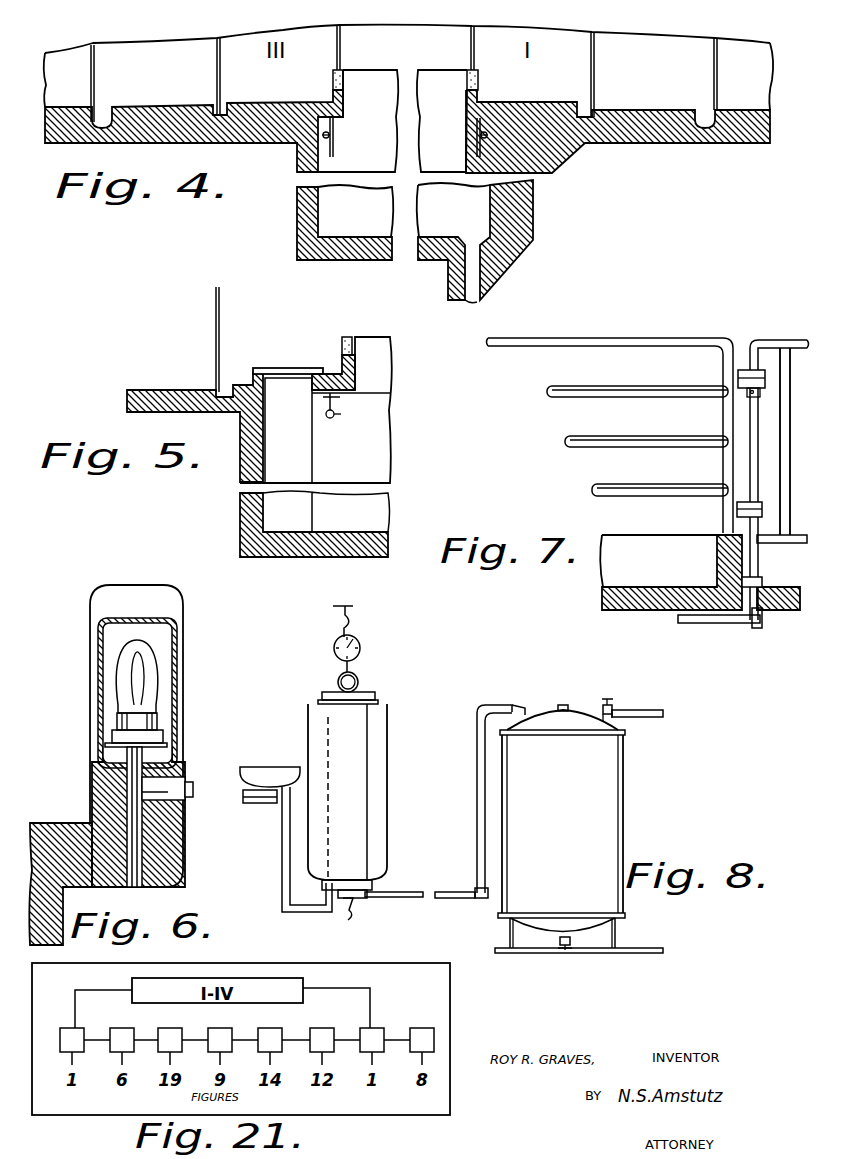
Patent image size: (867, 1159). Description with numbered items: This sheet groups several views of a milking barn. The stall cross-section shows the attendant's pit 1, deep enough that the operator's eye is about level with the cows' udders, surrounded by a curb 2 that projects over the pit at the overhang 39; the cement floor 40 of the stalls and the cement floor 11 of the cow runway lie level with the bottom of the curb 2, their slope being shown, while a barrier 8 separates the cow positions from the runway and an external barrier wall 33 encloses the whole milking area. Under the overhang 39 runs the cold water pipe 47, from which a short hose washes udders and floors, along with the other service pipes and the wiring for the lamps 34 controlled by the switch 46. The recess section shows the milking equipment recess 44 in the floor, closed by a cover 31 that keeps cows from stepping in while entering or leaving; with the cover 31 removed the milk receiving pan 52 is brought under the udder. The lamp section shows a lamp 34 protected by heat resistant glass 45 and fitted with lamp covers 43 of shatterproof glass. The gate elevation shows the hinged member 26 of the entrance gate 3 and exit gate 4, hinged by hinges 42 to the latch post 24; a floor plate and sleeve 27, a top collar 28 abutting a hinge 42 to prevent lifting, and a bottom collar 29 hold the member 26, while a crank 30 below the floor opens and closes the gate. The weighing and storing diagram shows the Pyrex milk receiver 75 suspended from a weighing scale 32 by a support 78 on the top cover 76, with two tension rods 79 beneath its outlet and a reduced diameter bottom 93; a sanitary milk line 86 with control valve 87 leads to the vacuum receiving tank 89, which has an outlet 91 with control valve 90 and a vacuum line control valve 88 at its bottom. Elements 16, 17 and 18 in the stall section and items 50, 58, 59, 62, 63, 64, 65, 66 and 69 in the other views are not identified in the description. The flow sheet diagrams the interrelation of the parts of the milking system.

In FIG. 4, the attendant's pit 1 is at (389, 134).
In FIG. 5, the attendant's pit 1 is at (378, 459).
In FIG. 4, the curb 2 is at (340, 80).
In FIG. 5, the curb 2 is at (360, 377).
In FIG. 7, the curb 2 is at (690, 536).
In FIG. 6, the curb 2 is at (165, 600).
In FIG. 7, the hinged entrance gate 3 is at (785, 340).
In FIG. 21, the hinged entrance gate 3 is at (72, 1040).
In FIG. 7, the hinged exit gate 4 is at (793, 425).
In FIG. 21, the hinged exit gate 4 is at (372, 1040).
In FIG. 4, the barrier 8 is at (222, 50).
In FIG. 5, the barrier 8 is at (221, 323).
In FIG. 7, the barrier 8 is at (655, 338).
In FIG. 4, the cement floor of runway 11 is at (157, 112).
In FIG. 5, the cement floor of runway 11 is at (147, 390).
In FIG. 4, the groove 16 is at (584, 116).
In FIG. 4, the channel 17 is at (107, 118).
In FIG. 4, the groove 18 is at (229, 110).
In FIG. 5, the groove 18 is at (231, 392).
In FIG. 7, the latch post 24 is at (730, 425).
In FIG. 7, the hinged member 26 is at (750, 463).
In FIG. 7, the floor plate and sleeve 27 is at (762, 617).
In FIG. 7, the top collar 28 is at (760, 397).
In FIG. 7, the bottom collar 29 is at (762, 582).
In FIG. 7, the crank 30 is at (719, 631).
In FIG. 5, the cover 31 is at (305, 368).
In FIG. 8, the weighing scale 32 is at (360, 646).
In FIG. 4, the external barrier wall 33 is at (88, 50).
In FIG. 6, the lamp 34 is at (155, 697).
In FIG. 4, the overhang 39 is at (336, 134).
In FIG. 5, the overhang 39 is at (352, 338).
In FIG. 6, the overhang 39 is at (185, 868).
In FIG. 4, the cement floor of stalls 40 is at (306, 108).
In FIG. 5, the cement floor of stalls 40 is at (248, 383).
In FIG. 7, the cement floor of stalls 40 is at (656, 590).
In FIG. 7, the hinge 42 is at (747, 370).
In FIG. 4, the lamp cover 43 is at (327, 211).
In FIG. 5, the lamp cover 43 is at (316, 461).
In FIG. 6, the lamp cover 43 is at (72, 915).
In FIG. 5, the milking equipment recess 44 is at (268, 468).
In FIG. 6, the heat resistant glass 45 is at (178, 648).
In FIG. 4, the switch 46 is at (478, 300).
In FIG. 6, the switch 46 is at (185, 780).
In FIG. 4, the cold water pipe 47 is at (330, 139).
In FIG. 5, the cold water pipe 47 is at (336, 418).
In FIG. 21, the cold water pipe 47 is at (169, 1040).
In FIG. 7, the base 50 is at (677, 618).
In FIG. 6, the base 50 is at (70, 823).
In FIG. 21, the base 50 is at (422, 1040).
In FIG. 8, the milk receiving pan 52 is at (290, 767).
In FIG. 21, the milk receiving pan 52 is at (122, 1040).
In FIG. 8, the nozzle 58 is at (259, 803).
In FIG. 5, the pin 59 is at (350, 405).
In FIG. 8, the pipe 62 is at (398, 887).
In FIG. 8, the nozzle 63 is at (366, 917).
In FIG. 8, the pipe 64 is at (300, 912).
In FIG. 8, the cylinder 65 is at (330, 802).
In FIG. 8, the outlet 66 is at (326, 888).
In FIG. 21, the unit 69 is at (220, 1040).
In FIG. 8, the milk receiver 75 is at (318, 725).
In FIG. 21, the milk receiver 75 is at (322, 1040).
In FIG. 8, the top cover 76 is at (378, 702).
In FIG. 8, the support 78 is at (358, 680).
In FIG. 8, the tension rod 79 is at (368, 758).
In FIG. 8, the sanitary milk line 86 is at (477, 808).
In FIG. 8, the control valve 87 is at (448, 898).
In FIG. 8, the vacuum line control valve 88 is at (565, 951).
In FIG. 8, the vacuum receiving tank 89 is at (607, 816).
In FIG. 8, the control valve 90 is at (608, 699).
In FIG. 8, the outlet 91 is at (660, 710).
In FIG. 21, the reduced diameter bottom 93 is at (270, 1040).